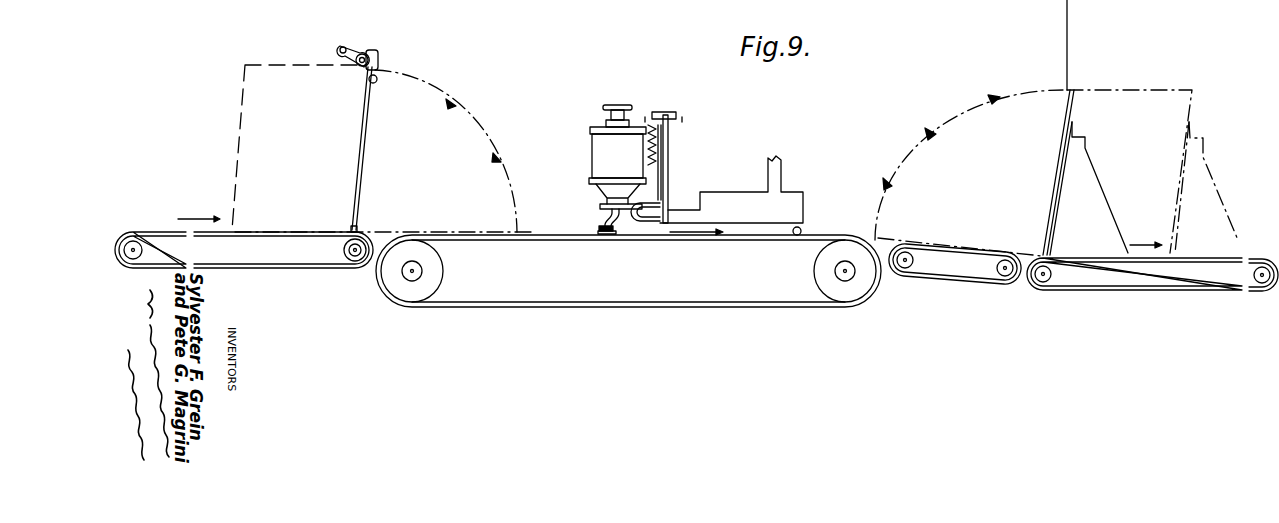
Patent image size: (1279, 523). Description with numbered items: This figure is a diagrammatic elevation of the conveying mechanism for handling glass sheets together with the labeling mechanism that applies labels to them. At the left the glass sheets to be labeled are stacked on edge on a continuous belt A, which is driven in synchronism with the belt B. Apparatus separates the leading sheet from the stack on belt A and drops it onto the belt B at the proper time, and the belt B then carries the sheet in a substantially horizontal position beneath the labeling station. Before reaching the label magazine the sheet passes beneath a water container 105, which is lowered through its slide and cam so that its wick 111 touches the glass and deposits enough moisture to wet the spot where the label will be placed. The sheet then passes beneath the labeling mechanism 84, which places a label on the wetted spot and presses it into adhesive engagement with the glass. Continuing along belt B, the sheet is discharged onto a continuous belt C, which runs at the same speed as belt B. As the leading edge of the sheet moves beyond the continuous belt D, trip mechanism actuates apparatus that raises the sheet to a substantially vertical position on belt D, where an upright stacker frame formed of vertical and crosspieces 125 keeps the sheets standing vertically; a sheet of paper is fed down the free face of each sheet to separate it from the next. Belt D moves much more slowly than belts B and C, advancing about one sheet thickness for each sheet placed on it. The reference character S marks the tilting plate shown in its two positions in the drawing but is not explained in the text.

The water container 105 is at (605, 152).
The labeling mechanism 84 is at (688, 210).
The wick 111 is at (598, 224).
The vertical and crosspieces 125 is at (1067, 170).
The tilting plate S is at (366, 147).
The continuous belt A is at (156, 231).
The belt B is at (537, 234).
The continuous belt C is at (976, 247).
The continuous belt D is at (1232, 258).